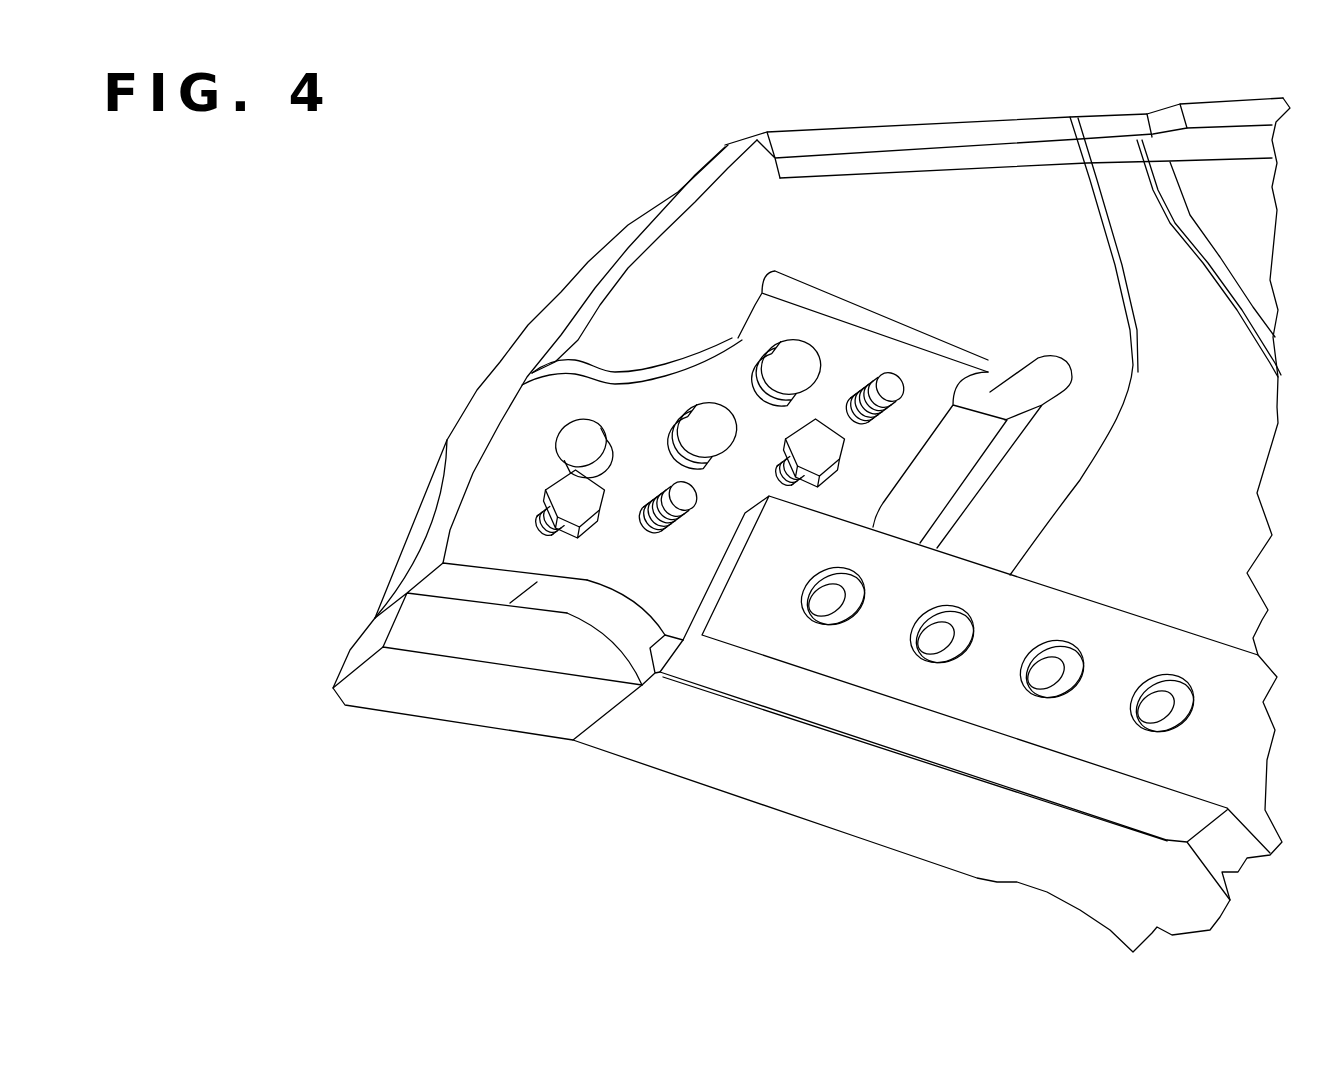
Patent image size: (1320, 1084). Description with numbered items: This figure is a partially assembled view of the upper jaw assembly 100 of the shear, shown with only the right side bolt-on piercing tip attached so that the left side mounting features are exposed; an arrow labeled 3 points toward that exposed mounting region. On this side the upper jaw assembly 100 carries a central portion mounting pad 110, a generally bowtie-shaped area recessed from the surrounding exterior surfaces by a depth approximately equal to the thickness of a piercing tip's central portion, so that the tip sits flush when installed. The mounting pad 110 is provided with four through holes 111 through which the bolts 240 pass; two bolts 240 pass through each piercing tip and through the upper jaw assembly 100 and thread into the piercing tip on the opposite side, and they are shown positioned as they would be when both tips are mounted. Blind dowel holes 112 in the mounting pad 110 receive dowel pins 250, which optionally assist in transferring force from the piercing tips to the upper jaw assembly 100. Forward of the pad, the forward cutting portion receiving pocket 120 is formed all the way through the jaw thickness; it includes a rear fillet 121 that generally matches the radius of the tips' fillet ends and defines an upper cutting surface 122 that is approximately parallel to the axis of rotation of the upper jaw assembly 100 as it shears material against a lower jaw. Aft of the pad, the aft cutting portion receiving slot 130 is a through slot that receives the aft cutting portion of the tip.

The mounting surface 3 is at (527, 407).
The upper jaw assembly 100 is at (588, 262).
The central portion mounting pad 110 is at (501, 362).
The through holes 111 is at (642, 530).
The blind dowel holes 112 is at (613, 447).
The forward cutting portion receiving pocket 120 is at (410, 627).
The rear fillet 121 is at (635, 597).
The upper cutting surface 122 is at (520, 593).
The aft cutting portion receiving slot 130 is at (978, 425).
The bolts 240 is at (553, 482).
The dowel pins 250 is at (770, 340).